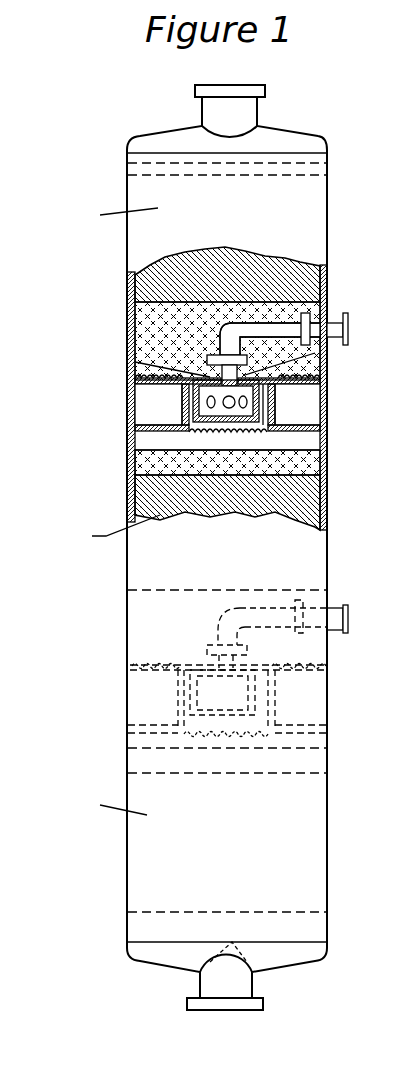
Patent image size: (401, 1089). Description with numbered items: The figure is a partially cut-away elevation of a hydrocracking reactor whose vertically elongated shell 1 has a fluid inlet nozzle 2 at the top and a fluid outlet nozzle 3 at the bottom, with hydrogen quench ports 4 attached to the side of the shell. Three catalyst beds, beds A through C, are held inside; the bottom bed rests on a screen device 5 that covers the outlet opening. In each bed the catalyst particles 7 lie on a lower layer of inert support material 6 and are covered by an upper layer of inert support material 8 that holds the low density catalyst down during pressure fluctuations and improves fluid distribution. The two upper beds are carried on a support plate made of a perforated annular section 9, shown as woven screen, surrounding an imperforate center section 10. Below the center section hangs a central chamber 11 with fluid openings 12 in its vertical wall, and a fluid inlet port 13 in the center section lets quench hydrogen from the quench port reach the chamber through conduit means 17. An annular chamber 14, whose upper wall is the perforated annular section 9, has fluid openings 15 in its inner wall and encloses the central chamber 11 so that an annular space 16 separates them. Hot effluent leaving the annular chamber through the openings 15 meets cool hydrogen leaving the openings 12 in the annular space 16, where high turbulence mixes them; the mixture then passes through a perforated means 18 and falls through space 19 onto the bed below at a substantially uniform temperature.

The shell 1 is at (330, 211).
The fluid inlet nozzle 2 is at (263, 91).
The fluid outlet nozzle 3 is at (265, 1003).
The hydrogen quench port 4 is at (345, 314).
The screen device 5 is at (235, 947).
The inert support material 6 is at (135, 313).
The catalyst particles 7 is at (222, 252).
The upper layer of inert support material 8 is at (136, 170).
The perforated annular section 9 is at (327, 363).
The imperforate center section 10 is at (136, 362).
The central chamber 11 is at (218, 410).
The fluid openings 12 is at (250, 365).
The fluid inlet port 13 is at (210, 372).
The annular chamber 14 is at (165, 412).
The fluid openings 15 is at (268, 403).
The annular space 16 is at (263, 398).
The conduit means 17 is at (221, 324).
The perforated means 18 is at (248, 430).
The space 19 is at (306, 447).